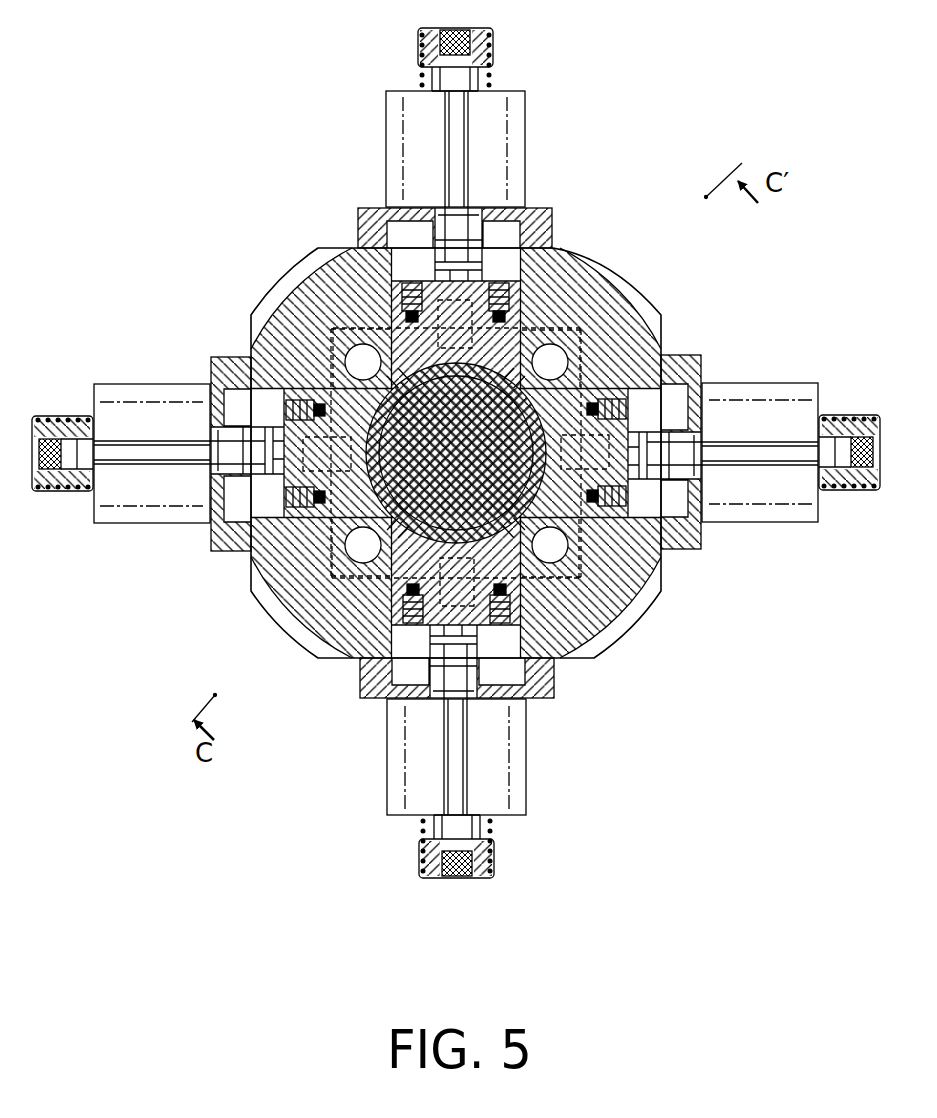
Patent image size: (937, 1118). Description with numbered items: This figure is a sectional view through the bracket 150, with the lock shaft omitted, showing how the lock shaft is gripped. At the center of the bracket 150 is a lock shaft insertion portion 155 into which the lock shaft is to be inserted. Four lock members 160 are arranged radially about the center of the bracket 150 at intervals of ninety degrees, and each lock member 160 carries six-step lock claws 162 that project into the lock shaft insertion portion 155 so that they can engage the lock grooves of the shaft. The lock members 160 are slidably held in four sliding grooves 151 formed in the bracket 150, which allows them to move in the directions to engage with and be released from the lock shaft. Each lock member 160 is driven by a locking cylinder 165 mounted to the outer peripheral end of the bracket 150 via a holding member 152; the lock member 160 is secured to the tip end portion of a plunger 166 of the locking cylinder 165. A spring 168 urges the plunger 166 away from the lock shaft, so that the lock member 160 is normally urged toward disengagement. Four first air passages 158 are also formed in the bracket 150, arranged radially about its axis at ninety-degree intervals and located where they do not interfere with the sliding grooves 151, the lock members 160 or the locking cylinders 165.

The bracket 150 is at (648, 595).
The sliding grooves 151 is at (553, 249).
The holding member 152 is at (362, 208).
The lock shaft insertion portion 155 is at (434, 493).
The first air passages 158 is at (318, 328).
The lock members 160 is at (410, 347).
The lock claws 162 is at (437, 376).
The locking cylinder 165 is at (526, 125).
The plunger 166 is at (481, 207).
The spring 168 is at (492, 58).